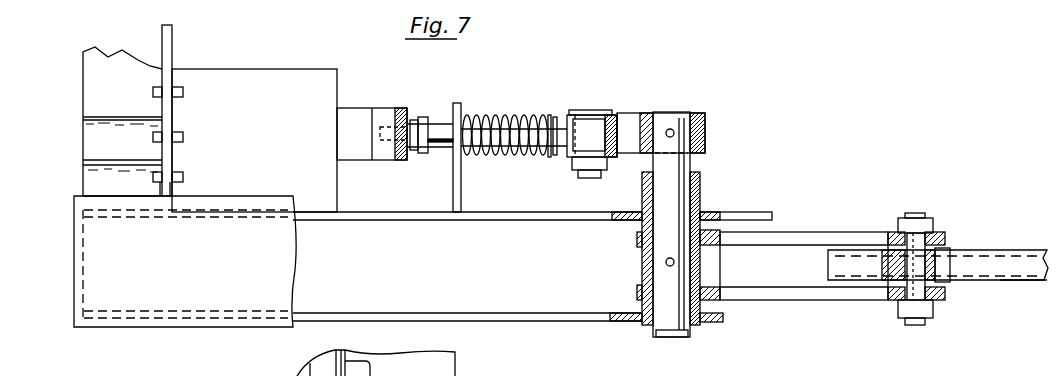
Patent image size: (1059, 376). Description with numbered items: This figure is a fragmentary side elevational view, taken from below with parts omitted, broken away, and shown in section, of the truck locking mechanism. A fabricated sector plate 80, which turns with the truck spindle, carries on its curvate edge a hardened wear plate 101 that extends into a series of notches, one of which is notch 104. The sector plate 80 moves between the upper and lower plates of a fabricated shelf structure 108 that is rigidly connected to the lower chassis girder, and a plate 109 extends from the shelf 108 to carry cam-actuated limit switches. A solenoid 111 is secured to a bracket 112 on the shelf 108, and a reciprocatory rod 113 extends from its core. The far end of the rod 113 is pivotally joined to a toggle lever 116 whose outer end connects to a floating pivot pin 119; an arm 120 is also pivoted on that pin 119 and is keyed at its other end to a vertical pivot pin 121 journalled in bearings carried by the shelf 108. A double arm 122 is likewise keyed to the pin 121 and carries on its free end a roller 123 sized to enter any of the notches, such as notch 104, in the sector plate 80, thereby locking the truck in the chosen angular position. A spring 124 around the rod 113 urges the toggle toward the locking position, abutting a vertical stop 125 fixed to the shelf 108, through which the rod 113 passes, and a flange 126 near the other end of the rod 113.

The sector plate 80 is at (997, 250).
The wear plate 101 is at (1012, 275).
The notch 104 is at (945, 255).
The shelf structure 108 is at (282, 267).
The plate 109 is at (715, 212).
The solenoid 111 is at (240, 82).
The bracket 112 is at (117, 66).
The reciprocatory rod 113 is at (436, 125).
The toggle lever 116 is at (588, 134).
The floating pivot pin 119 is at (593, 112).
The arm 120 is at (625, 125).
The vertical pivot pin 121 is at (680, 128).
The double arm 122 is at (757, 293).
The roller 123 is at (890, 268).
The spring 124 is at (505, 127).
The vertical stop 125 is at (457, 194).
The flange 126 is at (553, 115).